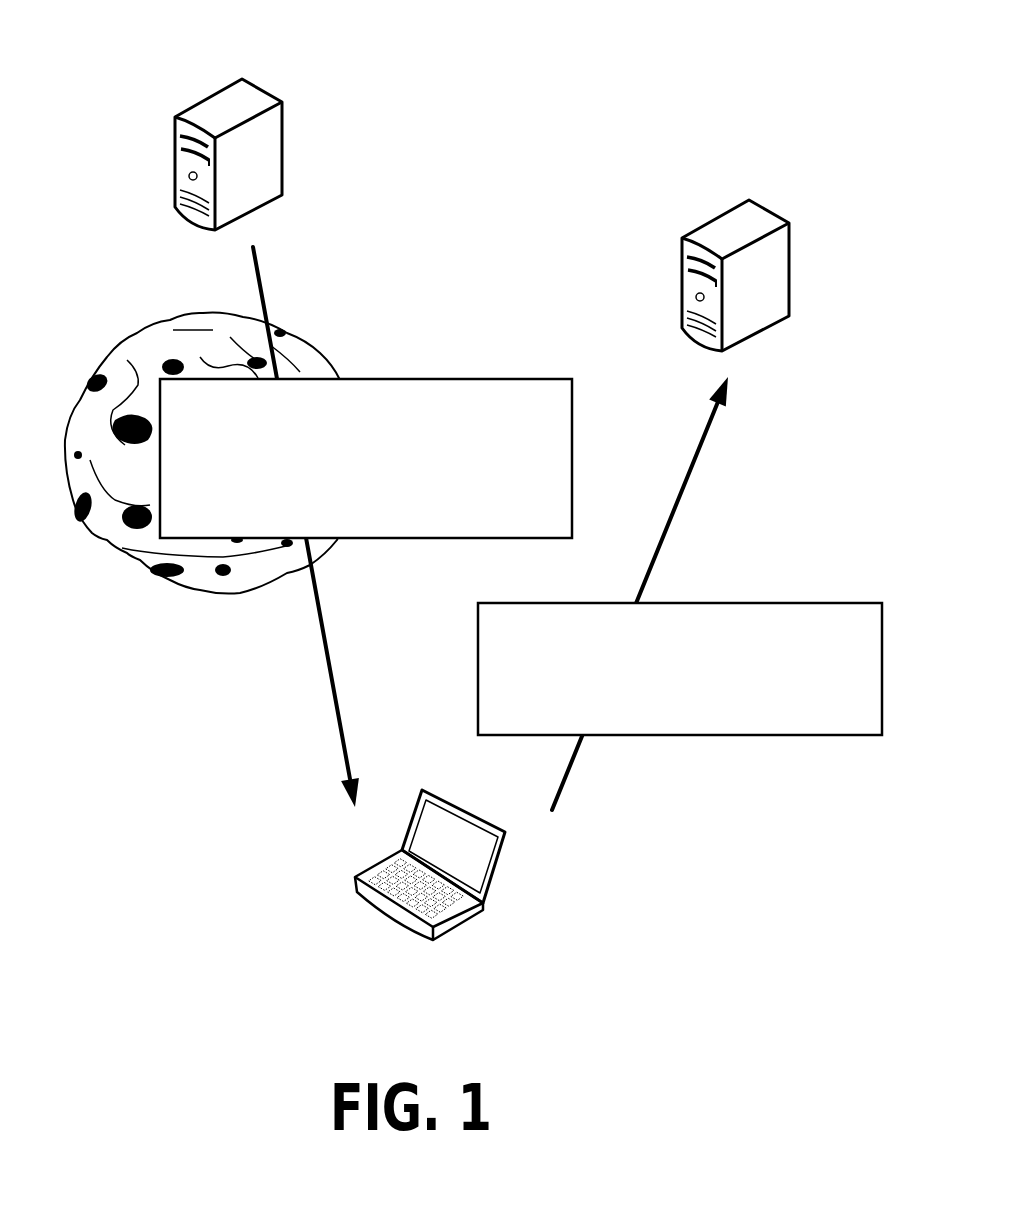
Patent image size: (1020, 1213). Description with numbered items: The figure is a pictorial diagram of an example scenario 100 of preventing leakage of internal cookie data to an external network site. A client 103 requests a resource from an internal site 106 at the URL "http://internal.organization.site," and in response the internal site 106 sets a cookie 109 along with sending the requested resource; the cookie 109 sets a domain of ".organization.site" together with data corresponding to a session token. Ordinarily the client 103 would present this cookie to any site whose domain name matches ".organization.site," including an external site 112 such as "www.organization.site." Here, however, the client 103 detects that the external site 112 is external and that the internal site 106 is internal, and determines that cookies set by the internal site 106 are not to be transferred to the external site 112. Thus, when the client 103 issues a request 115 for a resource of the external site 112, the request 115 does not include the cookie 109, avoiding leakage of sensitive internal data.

The example scenario 100 is at (730, 972).
The client 103 is at (450, 902).
The internal site 106 is at (225, 108).
The cookie 109 is at (450, 388).
The external site 112 is at (732, 230).
The request 115 is at (770, 618).